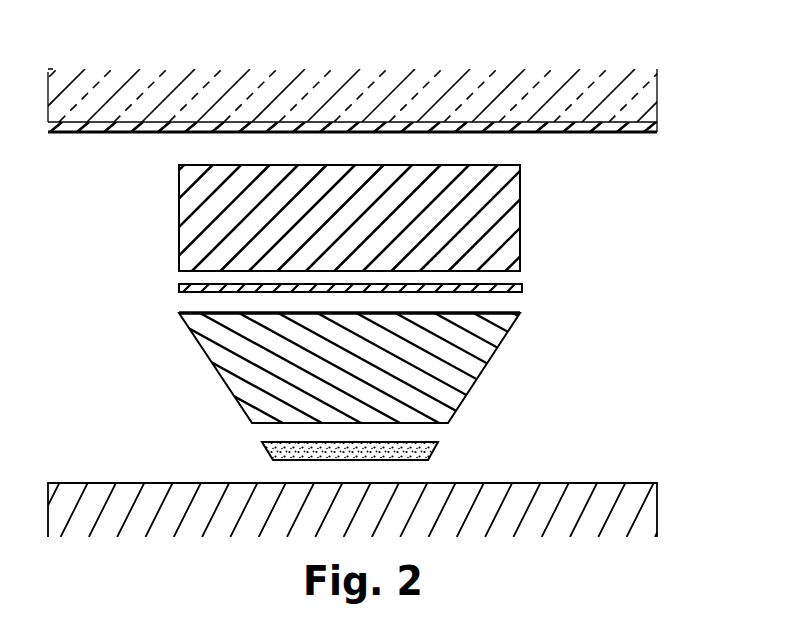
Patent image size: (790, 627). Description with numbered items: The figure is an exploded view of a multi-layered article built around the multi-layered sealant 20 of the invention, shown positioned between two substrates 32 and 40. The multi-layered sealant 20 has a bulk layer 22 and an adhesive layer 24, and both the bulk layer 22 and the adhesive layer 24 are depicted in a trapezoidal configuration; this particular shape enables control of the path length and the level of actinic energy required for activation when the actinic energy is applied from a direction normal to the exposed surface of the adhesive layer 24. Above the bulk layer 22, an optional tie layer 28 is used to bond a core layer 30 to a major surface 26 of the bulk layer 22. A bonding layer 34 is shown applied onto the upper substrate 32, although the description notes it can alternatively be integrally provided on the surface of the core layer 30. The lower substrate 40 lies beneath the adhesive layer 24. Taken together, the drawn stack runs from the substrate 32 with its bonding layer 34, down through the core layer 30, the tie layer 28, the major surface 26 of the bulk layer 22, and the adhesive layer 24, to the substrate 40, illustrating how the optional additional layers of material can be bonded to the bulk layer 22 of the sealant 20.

The multi-layered sealant 20 is at (106, 326).
The bulk layer 22 is at (457, 381).
The adhesive layer 24 is at (438, 442).
The major surface 26 is at (503, 311).
The tie layer 28 is at (520, 288).
The core layer 30 is at (510, 221).
The substrate 32 is at (582, 90).
The bonding layer 34 is at (632, 131).
The substrate 40 is at (630, 512).